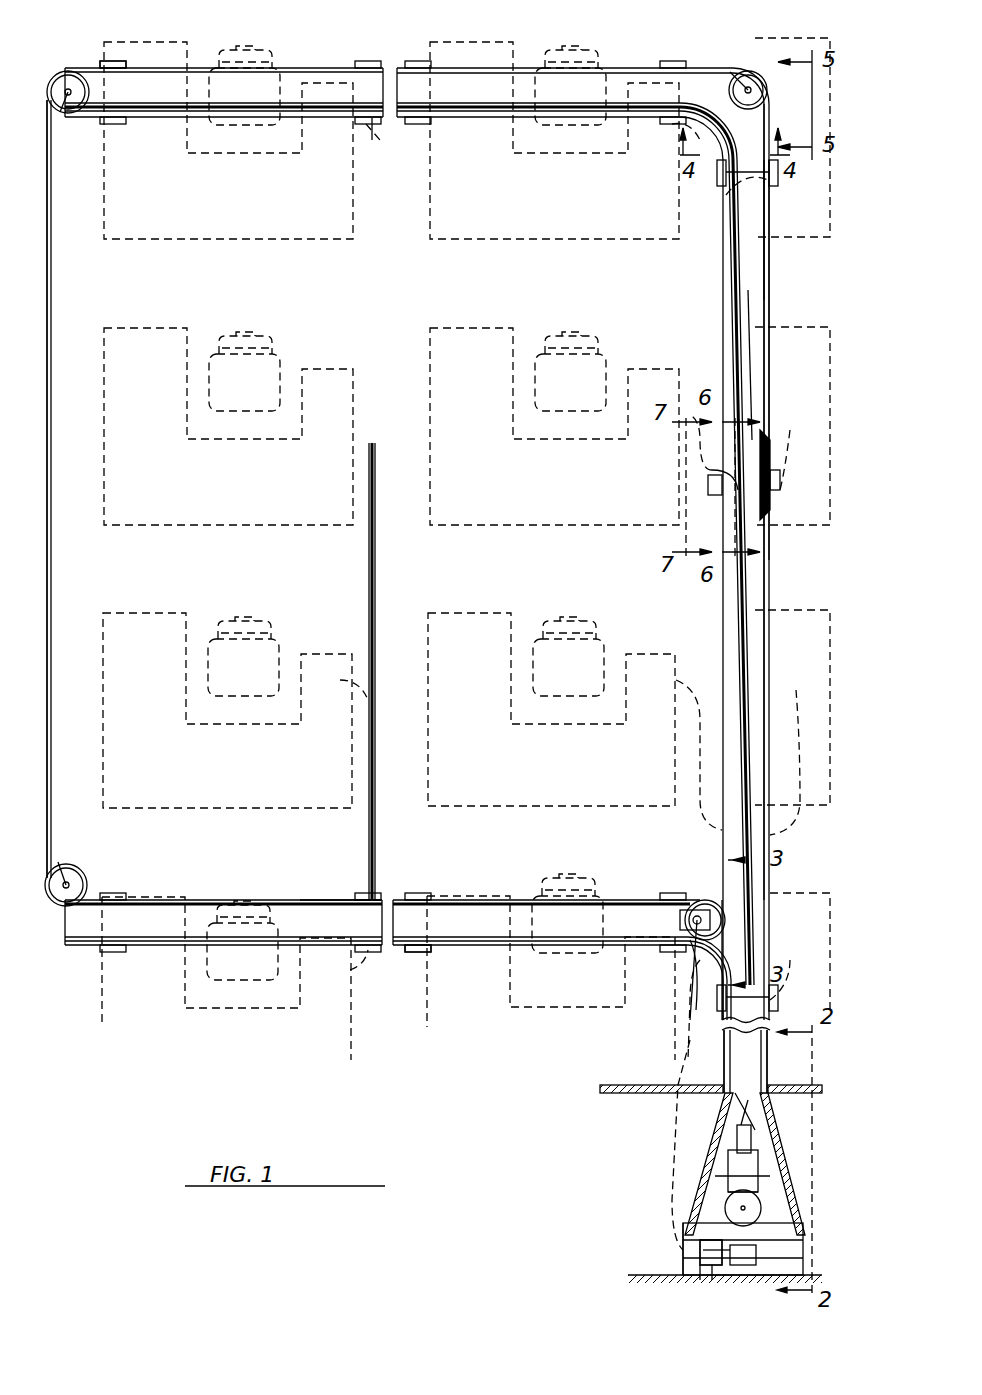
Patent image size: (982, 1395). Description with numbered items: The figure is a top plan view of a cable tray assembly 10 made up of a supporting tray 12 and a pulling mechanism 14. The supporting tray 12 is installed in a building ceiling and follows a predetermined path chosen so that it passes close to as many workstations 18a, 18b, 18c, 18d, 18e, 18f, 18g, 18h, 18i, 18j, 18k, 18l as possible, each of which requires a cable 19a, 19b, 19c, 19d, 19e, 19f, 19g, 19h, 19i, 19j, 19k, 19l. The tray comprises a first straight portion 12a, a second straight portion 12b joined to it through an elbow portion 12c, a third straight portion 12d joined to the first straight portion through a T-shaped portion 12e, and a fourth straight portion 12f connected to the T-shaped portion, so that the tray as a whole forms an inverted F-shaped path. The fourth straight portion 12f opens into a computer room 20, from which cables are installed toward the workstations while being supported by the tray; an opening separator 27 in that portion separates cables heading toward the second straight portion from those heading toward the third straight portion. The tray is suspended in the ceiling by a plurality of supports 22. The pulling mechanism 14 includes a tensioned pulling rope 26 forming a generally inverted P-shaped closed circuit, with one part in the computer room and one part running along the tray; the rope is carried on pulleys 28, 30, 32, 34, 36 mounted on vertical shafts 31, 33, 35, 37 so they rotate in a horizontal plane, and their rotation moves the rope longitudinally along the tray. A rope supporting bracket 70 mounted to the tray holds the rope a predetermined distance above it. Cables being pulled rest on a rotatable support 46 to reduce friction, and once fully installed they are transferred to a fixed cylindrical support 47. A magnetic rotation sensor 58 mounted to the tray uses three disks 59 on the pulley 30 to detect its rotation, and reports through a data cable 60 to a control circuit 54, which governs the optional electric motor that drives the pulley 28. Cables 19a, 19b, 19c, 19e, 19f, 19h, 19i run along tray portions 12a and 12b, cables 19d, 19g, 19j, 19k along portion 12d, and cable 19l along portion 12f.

The cable tray assembly 10 is at (205, 1052).
The supporting tray 12 is at (785, 642).
The first straight portion 12a is at (770, 360).
The second straight portion 12b is at (522, 68).
The elbow portion 12c is at (770, 122).
The third straight portion 12d is at (600, 900).
The T-shaped portion 12e is at (740, 920).
The fourth straight portion 12f is at (770, 1058).
The pulling mechanism 14 is at (790, 1160).
The workstation 18a is at (172, 42).
The workstation 18b is at (478, 42).
The workstation 18c is at (795, 38).
The workstation 18d is at (123, 328).
The workstation 18e is at (448, 328).
The workstation 18f is at (800, 327).
The workstation 18g is at (122, 613).
The workstation 18h is at (440, 613).
The workstation 18i is at (798, 610).
The workstation 18j is at (148, 897).
The workstation 18k is at (475, 896).
The workstation 18l is at (785, 893).
The cable 19a is at (370, 125).
The cable 19b is at (672, 126).
The cable 19c is at (768, 182).
The cable 19d is at (372, 600).
The cable 19e is at (708, 486).
The cable 19f is at (785, 480).
The cable 19g is at (372, 760).
The cable 19h is at (700, 770).
The cable 19i is at (800, 765).
The cable 19j is at (370, 955).
The cable 19k is at (690, 975).
The cable 19l is at (790, 985).
The computer room 20 is at (640, 1205).
The support 22 is at (113, 61).
The pulling rope 26 is at (770, 580).
The opening separator 27 is at (740, 1105).
The pulley 28 is at (762, 1208).
The pulley 30 is at (708, 900).
The vertical shaft 31 is at (697, 905).
The pulley 32 is at (78, 878).
The vertical shaft 33 is at (66, 872).
The pulley 34 is at (68, 80).
The vertical shaft 35 is at (82, 108).
The pulley 36 is at (748, 72).
The vertical shaft 37 is at (736, 80).
The rotatable support 46 is at (752, 1140).
The fixed cylindrical support 47 is at (710, 1232).
The control circuit 54 is at (698, 1275).
The magnetic rotation sensor 58 is at (690, 920).
The disk 59 is at (695, 960).
The data cable 60 is at (678, 1075).
The rope supporting bracket 70 is at (780, 520).